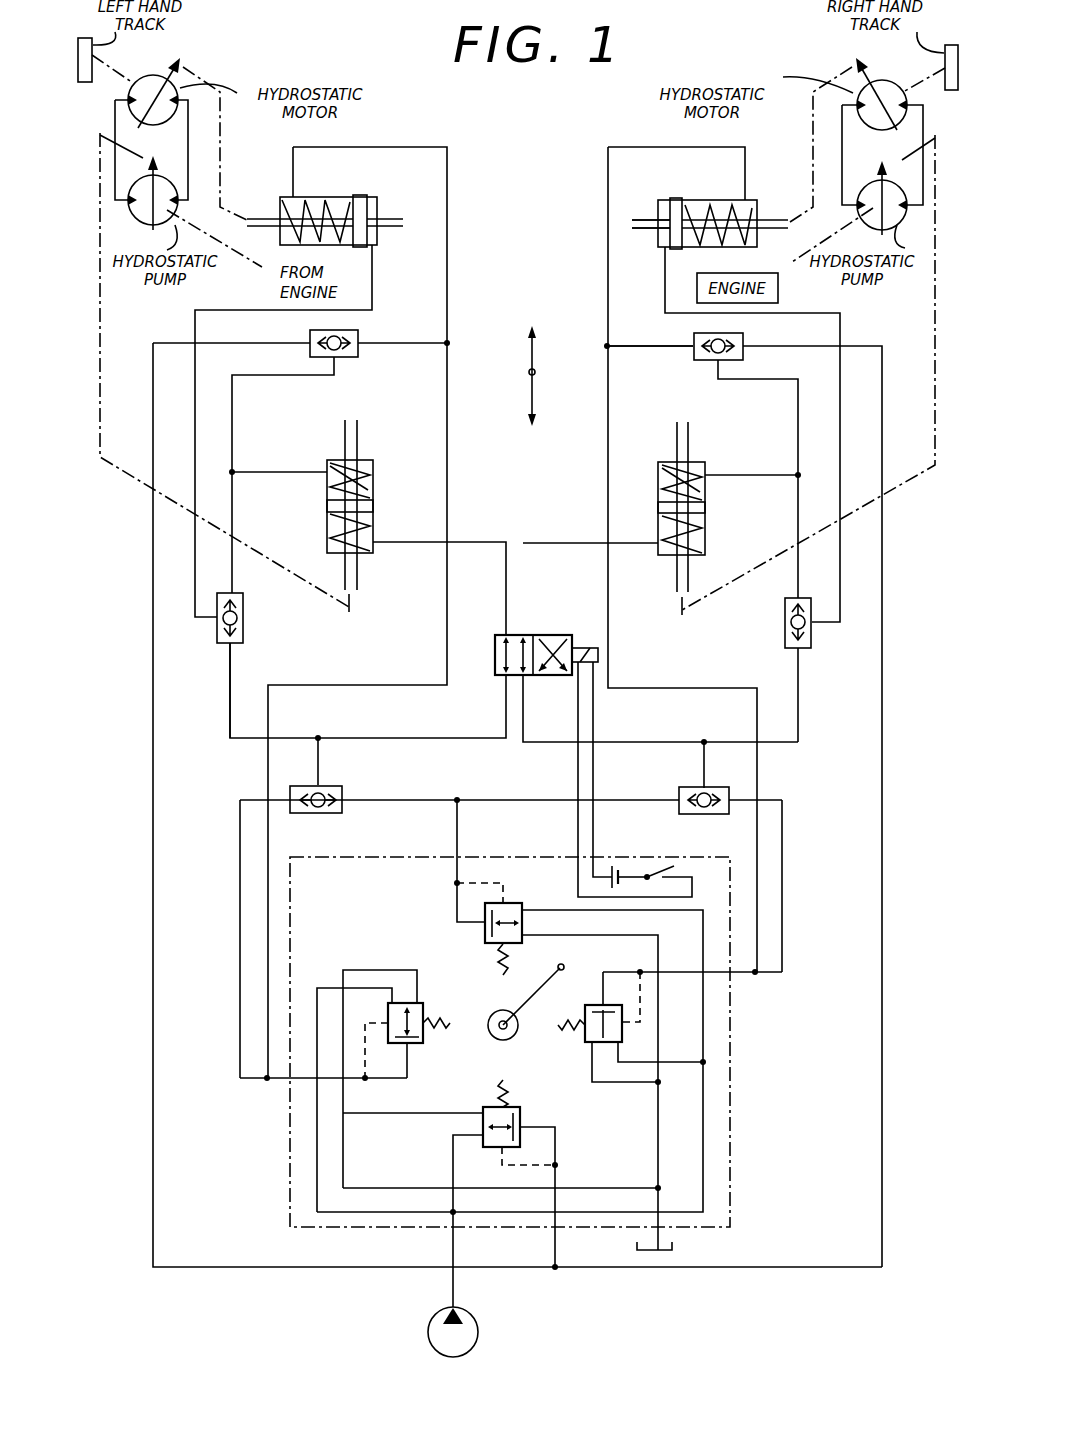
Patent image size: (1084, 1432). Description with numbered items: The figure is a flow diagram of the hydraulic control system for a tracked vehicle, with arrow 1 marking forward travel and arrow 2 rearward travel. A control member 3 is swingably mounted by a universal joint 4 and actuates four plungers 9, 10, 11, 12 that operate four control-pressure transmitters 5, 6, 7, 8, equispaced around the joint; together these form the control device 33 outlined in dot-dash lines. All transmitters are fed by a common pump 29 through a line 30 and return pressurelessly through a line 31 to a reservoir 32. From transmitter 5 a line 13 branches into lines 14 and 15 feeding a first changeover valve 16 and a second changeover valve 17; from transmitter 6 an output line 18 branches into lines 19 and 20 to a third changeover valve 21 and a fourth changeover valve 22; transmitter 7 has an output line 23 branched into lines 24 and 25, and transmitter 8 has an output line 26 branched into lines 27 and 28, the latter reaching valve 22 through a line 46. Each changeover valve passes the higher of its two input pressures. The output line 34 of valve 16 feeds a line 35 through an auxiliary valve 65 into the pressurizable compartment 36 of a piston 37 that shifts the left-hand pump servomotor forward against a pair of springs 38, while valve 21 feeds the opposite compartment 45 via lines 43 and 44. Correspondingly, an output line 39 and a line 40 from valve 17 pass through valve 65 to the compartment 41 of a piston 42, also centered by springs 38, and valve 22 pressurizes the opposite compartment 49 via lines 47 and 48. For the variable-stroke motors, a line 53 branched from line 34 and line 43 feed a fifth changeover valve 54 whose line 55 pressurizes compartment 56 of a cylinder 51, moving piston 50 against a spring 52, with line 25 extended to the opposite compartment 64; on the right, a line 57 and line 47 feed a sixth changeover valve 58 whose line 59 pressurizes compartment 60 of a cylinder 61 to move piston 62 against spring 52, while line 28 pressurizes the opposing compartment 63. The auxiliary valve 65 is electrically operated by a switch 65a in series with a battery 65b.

The forward-travel arrow 1 is at (536, 362).
The rearward-travel arrow 2 is at (536, 392).
The control member 3 is at (530, 998).
The universal joint 4 is at (492, 1038).
The control-pressure transmitter 5 is at (514, 903).
The control-pressure transmitter 6 is at (522, 1112).
The control-pressure transmitter 7 is at (414, 1043).
The control-pressure transmitter 8 is at (580, 1040).
The plunger 9 is at (508, 968).
The plunger 10 is at (497, 1092).
The plunger 11 is at (446, 1018).
The plunger 12 is at (576, 1012).
The line 13 is at (460, 836).
The branch line 14 is at (388, 798).
The branch line 15 is at (527, 798).
The first changeover valve 16 is at (328, 786).
The second changeover valve 17 is at (720, 813).
The output line 18 is at (557, 1144).
The branch line 19 is at (152, 385).
The branch line 20 is at (884, 383).
The third changeover valve 21 is at (350, 360).
The fourth changeover valve 22 is at (690, 360).
The output line 23 is at (268, 1082).
The line 24 is at (238, 857).
The line 25 is at (450, 196).
The output line 26 is at (757, 975).
The branch line 27 is at (790, 882).
The branch line 28 is at (606, 192).
The pump 29 is at (435, 1330).
The supply line 30 is at (318, 986).
The return line 31 is at (372, 968).
The reservoir 32 is at (675, 1250).
The control device 33 is at (732, 1110).
The output line 34 is at (316, 766).
The line 35 is at (506, 540).
The pressurizable compartment 36 is at (375, 521).
The piston 37 is at (326, 507).
The springs 38 is at (370, 485).
The output line 39 is at (702, 762).
The line 40 is at (574, 545).
The pressurizable compartment 41 is at (706, 535).
The piston 42 is at (658, 510).
The line 43 is at (235, 428).
The line 44 is at (258, 473).
The pressurizable compartment 45 is at (326, 490).
The line 46 is at (645, 346).
The line 47 is at (797, 405).
The line 48 is at (746, 470).
The pressurizable compartment 49 is at (660, 472).
The servomotor piston 50 is at (362, 197).
The cylinder 51 is at (318, 197).
The spring 52 is at (328, 240).
The line 53 is at (229, 688).
The fifth changeover valve 54 is at (245, 618).
The line 55 is at (255, 308).
The pressurizable compartment 56 is at (378, 213).
The line 57 is at (806, 690).
The sixth changeover valve 58 is at (785, 616).
The line 59 is at (808, 314).
The compartment 60 is at (665, 200).
The cylinder 61 is at (684, 249).
The servomotor piston 62 is at (676, 200).
The compartment 63 is at (748, 240).
The pressurizable compartment 64 is at (305, 243).
The auxiliary valve 65 is at (548, 636).
The switch 65a is at (658, 868).
The battery 65b is at (618, 865).